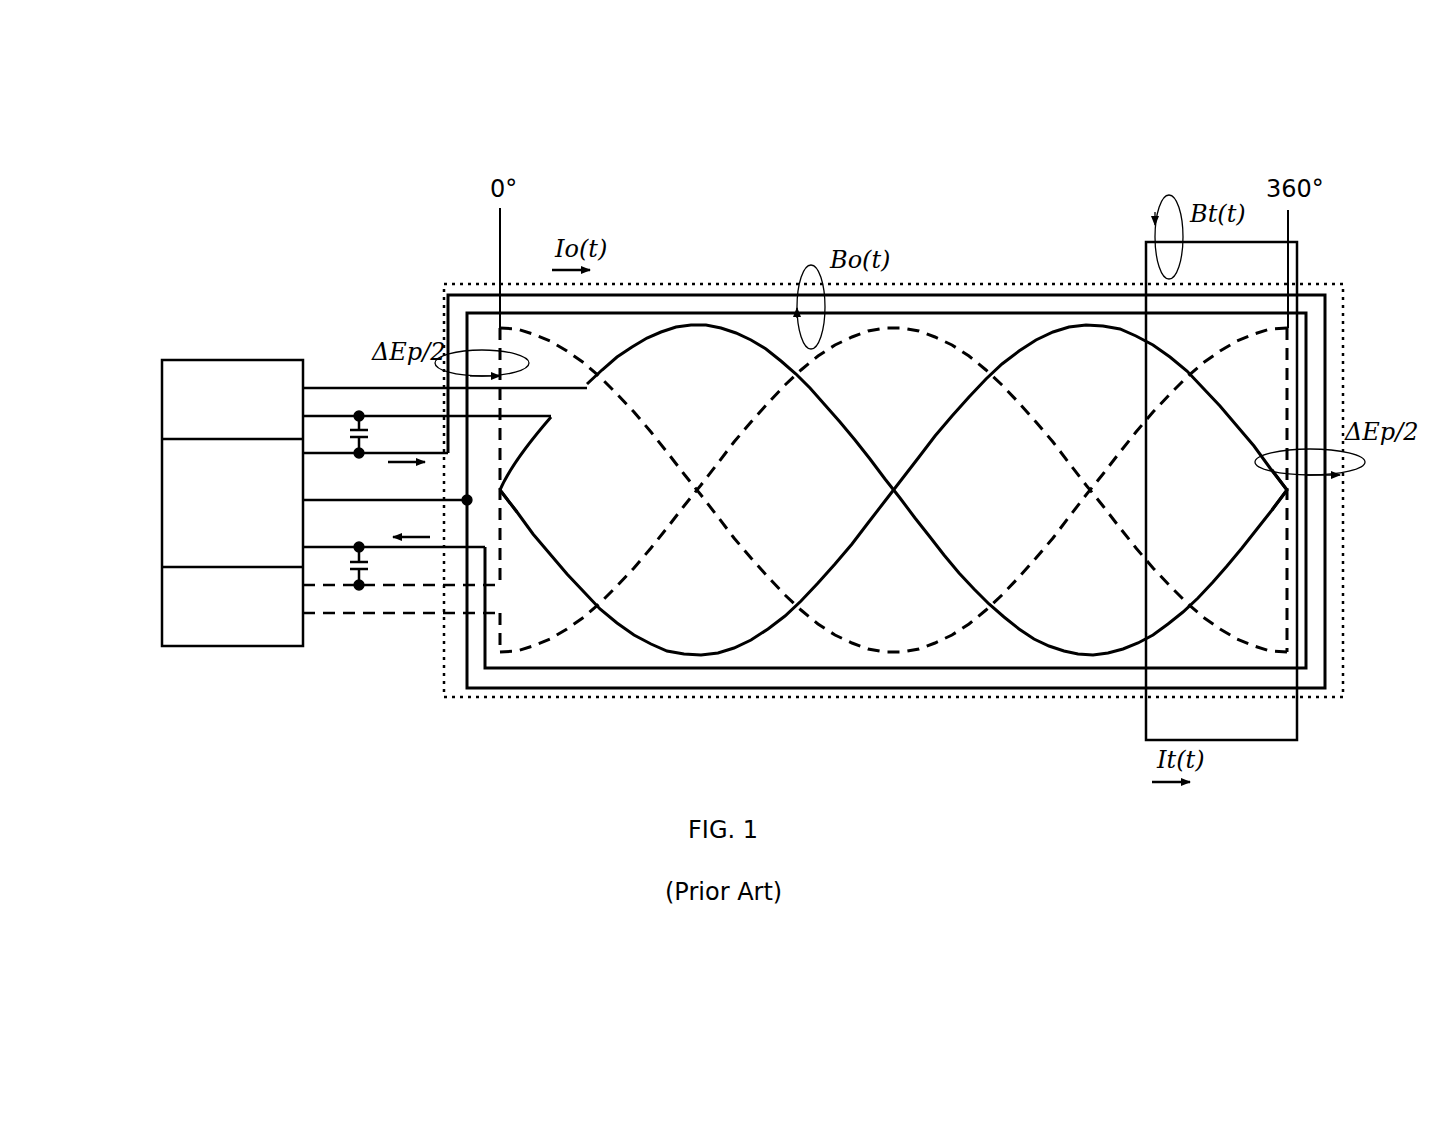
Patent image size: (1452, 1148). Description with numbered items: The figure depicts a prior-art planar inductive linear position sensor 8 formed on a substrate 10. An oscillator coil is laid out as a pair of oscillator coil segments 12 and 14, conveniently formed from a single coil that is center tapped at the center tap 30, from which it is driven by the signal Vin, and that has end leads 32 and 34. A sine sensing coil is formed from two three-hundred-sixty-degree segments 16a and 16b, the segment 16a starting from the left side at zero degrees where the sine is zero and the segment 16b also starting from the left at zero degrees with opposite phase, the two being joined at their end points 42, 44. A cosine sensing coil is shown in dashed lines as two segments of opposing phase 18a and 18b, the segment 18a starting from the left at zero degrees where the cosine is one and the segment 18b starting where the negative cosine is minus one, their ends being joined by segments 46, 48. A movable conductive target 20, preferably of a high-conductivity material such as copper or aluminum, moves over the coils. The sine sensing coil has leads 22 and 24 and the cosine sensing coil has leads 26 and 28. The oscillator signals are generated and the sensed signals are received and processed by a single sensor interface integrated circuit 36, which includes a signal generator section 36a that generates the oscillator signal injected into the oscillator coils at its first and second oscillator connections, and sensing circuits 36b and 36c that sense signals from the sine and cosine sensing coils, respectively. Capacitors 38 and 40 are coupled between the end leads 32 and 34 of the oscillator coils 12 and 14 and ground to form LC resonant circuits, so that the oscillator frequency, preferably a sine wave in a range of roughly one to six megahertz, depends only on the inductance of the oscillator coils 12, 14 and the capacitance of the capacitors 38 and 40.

The planar inductive linear position sensor 8 is at (1283, 147).
The substrate 10 is at (531, 700).
The oscillator coil segment 12 is at (648, 295).
The oscillator coil segment 14 is at (612, 670).
The sine sensing coil segment 16a is at (703, 328).
The sine sensing coil segment 16b is at (688, 650).
The cosine sensing coil segment 18a is at (900, 330).
The cosine sensing coil segment 18b is at (888, 650).
The movable conductive target 20 is at (1297, 720).
The lead 22 is at (445, 374).
The lead 24 is at (427, 403).
The lead 26 is at (401, 575).
The lead 28 is at (401, 602).
The center tap 30 is at (387, 488).
The end lead 32 is at (375, 434).
The end lead 34 is at (394, 535).
The sensor interface integrated circuit 36 is at (232, 648).
The signal generator section 36a is at (232, 503).
The sensing circuit 36b is at (233, 402).
The sensing circuit 36c is at (232, 599).
The capacitor 38 is at (372, 433).
The capacitor 40 is at (372, 566).
The end point 42 is at (505, 490).
The end point 44 is at (1282, 490).
The segment 46 is at (500, 449).
The segment 48 is at (1288, 544).